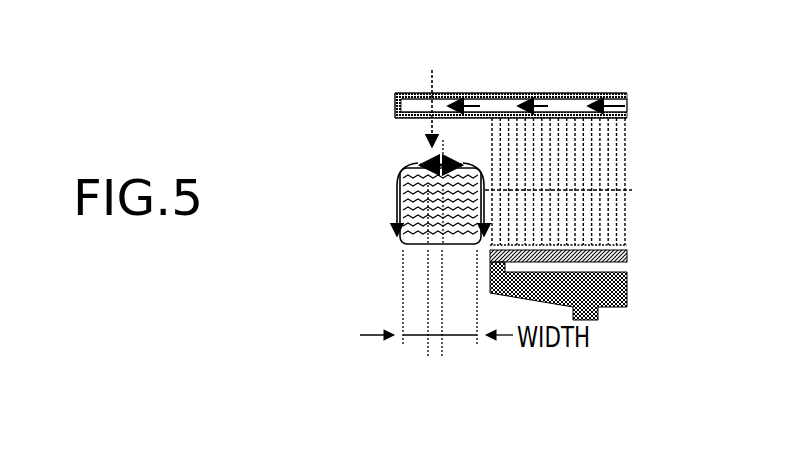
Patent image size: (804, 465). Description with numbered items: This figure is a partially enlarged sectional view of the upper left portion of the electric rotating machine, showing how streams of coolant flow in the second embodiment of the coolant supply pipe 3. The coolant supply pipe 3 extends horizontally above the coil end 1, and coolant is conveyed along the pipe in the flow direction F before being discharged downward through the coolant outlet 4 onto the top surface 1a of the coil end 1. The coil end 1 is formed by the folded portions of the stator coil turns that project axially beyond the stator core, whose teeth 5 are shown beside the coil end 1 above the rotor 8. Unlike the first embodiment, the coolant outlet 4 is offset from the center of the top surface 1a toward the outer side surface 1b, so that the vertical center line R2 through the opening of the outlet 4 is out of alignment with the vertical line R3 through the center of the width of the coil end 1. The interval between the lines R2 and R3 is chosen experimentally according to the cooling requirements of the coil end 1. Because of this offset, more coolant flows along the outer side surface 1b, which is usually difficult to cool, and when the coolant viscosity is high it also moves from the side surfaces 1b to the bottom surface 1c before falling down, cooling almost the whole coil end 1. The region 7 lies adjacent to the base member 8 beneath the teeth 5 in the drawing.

The coil end 1 is at (400, 228).
The top surface of coil end 1a is at (428, 155).
The outer side surface of coil end 1b is at (397, 195).
The bottom surface of coil end 1c is at (420, 250).
The coolant supply pipe 3 is at (565, 100).
The coolant outlet 4 is at (420, 93).
The teeth 5 is at (595, 160).
The slot 7 is at (572, 268).
The rotor 8 is at (623, 307).
The fluid flow F is at (530, 97).
The vertical center line of outlet R2 is at (428, 357).
The vertical line through center of coil end width R3 is at (442, 357).